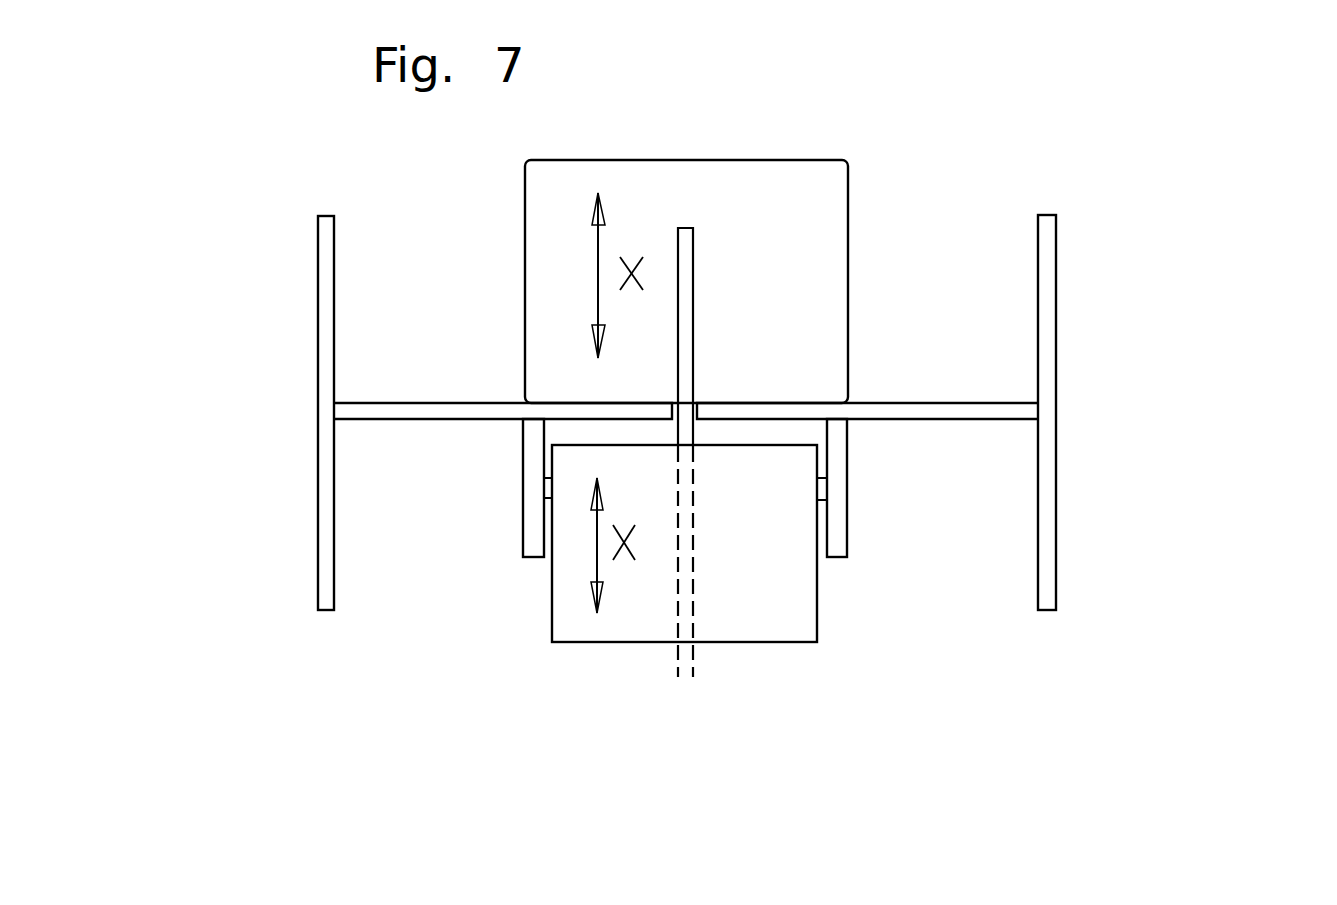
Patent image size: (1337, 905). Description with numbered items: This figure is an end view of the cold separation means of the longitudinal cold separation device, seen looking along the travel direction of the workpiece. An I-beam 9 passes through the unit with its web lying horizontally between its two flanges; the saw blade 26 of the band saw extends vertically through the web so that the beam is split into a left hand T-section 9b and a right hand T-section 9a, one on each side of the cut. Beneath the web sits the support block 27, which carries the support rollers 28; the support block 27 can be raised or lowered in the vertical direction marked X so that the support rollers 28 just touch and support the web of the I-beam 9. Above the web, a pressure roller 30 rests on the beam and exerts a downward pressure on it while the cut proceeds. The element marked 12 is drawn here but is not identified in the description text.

The H-shaped support beam 9 is at (697, 412).
The left flange of support beam 9a is at (318, 485).
The right flange of support beam 9b is at (1052, 357).
The clamping device 12 is at (785, 629).
The vertical rod 26 is at (695, 335).
The lower clamping block 27 is at (738, 620).
The clamping jaws 28 is at (527, 532).
The upper clamping block 30 is at (771, 207).